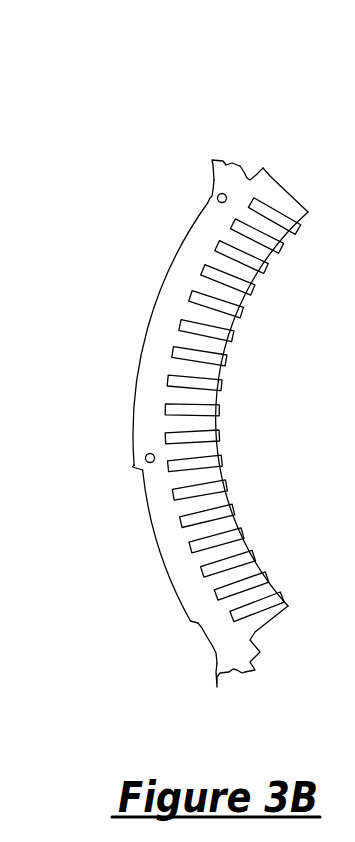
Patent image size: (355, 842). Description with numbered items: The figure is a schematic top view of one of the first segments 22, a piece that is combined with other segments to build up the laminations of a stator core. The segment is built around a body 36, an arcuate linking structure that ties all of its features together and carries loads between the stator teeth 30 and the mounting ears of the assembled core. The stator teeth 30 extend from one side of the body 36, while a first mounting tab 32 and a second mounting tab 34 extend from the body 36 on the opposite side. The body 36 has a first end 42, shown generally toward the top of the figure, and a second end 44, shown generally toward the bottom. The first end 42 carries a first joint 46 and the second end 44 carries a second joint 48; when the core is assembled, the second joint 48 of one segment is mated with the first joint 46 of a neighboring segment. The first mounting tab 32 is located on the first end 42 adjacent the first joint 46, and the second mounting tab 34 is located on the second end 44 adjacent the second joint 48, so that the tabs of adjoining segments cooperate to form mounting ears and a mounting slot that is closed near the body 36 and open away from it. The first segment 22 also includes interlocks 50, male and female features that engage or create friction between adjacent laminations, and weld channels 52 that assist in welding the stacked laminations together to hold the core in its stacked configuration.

The first segment 22 is at (240, 114).
The stator teeth 30 is at (218, 343).
The first mounting tab 32 is at (215, 159).
The second mounting tab 34 is at (216, 682).
The body 36 is at (142, 398).
The first end 42 is at (214, 188).
The second end 44 is at (220, 640).
The first joint 46 is at (250, 178).
The second joint 48 is at (245, 672).
The interlocks 50 is at (145, 457).
The weld channels 52 is at (137, 474).